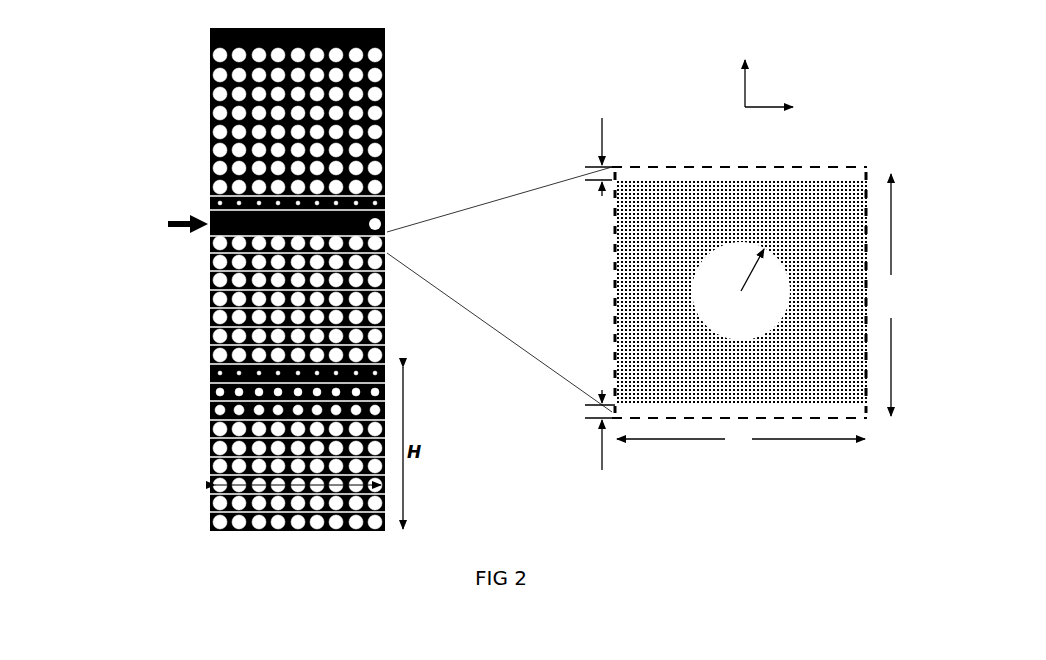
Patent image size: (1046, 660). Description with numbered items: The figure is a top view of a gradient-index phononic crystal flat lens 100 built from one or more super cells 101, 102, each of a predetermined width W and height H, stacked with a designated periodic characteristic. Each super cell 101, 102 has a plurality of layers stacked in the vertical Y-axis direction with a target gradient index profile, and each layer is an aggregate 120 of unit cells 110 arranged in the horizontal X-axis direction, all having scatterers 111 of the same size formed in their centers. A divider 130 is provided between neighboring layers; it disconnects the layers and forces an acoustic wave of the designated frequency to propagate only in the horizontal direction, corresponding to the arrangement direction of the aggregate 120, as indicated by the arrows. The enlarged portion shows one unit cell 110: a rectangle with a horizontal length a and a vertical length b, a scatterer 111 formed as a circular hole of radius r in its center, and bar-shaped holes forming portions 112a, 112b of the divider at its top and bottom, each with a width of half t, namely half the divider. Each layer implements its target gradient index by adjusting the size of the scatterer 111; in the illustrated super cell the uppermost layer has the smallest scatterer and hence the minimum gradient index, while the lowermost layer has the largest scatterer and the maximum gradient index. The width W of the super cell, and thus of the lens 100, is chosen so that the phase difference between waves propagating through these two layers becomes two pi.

The gradient-index phononic crystal flat lens 100 is at (174, 110).
The super cell 101 is at (195, 296).
The divider 130 is at (211, 308).
The aggregate 120 is at (211, 375).
The super cell 102 is at (197, 470).
The unit cell 110 is at (828, 155).
The scatterer 111 is at (750, 328).
The portion of the divider 112a is at (830, 172).
The portion of the divider 112b is at (848, 413).